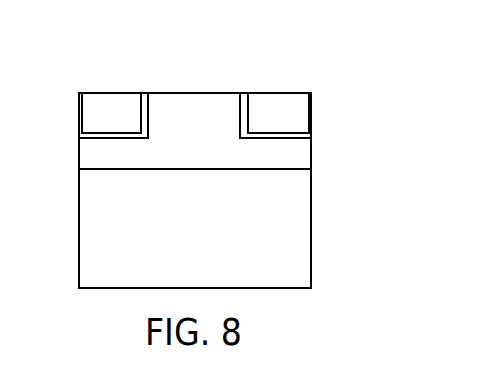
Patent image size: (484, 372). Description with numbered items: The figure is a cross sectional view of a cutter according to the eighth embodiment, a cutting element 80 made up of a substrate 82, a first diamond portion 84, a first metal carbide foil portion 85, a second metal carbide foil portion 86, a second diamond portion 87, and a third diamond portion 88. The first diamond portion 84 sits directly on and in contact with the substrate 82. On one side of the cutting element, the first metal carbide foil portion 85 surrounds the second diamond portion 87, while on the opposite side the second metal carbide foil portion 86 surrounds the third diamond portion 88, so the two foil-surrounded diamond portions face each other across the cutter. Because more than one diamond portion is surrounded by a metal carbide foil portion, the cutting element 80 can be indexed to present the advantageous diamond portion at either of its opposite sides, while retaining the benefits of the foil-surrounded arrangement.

The cutting element 80 is at (342, 60).
The substrate 82 is at (294, 230).
The first diamond portion 84 is at (294, 154).
The first metal carbide foil portion 85 is at (95, 138).
The second metal carbide foil portion 86 is at (295, 137).
The second diamond portion 87 is at (93, 112).
The third diamond portion 88 is at (295, 113).